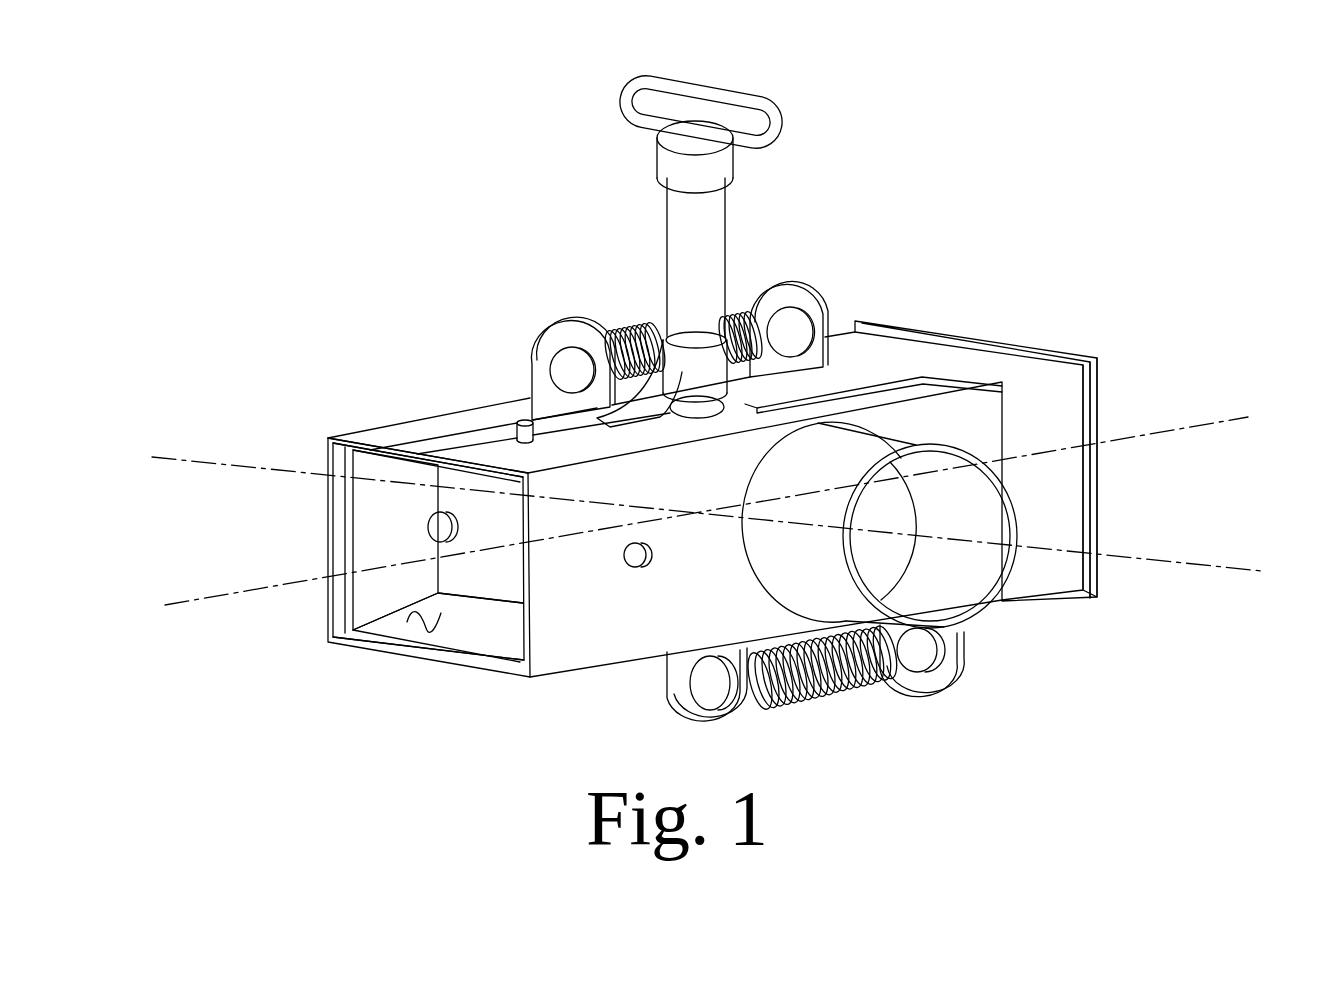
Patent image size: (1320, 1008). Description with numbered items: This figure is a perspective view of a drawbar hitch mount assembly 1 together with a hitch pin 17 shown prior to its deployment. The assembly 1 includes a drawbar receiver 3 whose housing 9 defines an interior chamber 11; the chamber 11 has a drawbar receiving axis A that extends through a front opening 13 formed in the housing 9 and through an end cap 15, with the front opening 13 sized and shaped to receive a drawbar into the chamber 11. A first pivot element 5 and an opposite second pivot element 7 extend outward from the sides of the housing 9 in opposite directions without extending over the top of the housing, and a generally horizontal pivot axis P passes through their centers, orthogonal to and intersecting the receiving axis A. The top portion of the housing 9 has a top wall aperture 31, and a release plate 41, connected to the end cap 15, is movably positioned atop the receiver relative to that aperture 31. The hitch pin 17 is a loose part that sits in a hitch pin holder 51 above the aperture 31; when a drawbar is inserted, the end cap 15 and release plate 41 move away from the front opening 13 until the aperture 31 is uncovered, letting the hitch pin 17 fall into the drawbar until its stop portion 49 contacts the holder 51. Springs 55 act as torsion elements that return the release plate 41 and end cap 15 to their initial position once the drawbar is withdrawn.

The drawbar hitch mount assembly 1 is at (1226, 384).
The drawbar receiver 3 is at (556, 676).
The first pivot element 5 is at (975, 620).
The second pivot element 7 is at (463, 402).
The housing 9 is at (393, 443).
The chamber 11 is at (420, 634).
The front opening 13 is at (367, 560).
The end cap 15 is at (1100, 517).
The hitch pin 17 is at (722, 238).
The top wall aperture 31 is at (692, 408).
The release plate 41 is at (962, 367).
The stop portion 49 is at (662, 186).
The hitch pin holder 51 is at (748, 335).
The springs 55 is at (650, 325).